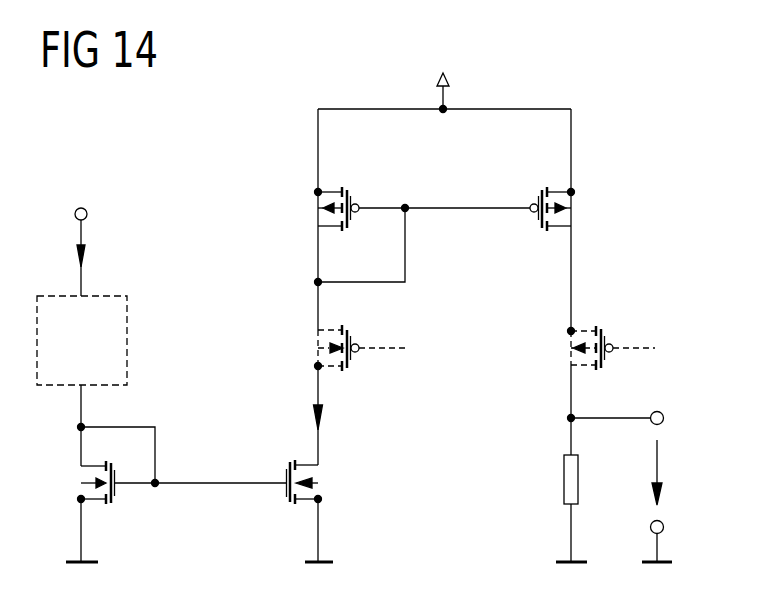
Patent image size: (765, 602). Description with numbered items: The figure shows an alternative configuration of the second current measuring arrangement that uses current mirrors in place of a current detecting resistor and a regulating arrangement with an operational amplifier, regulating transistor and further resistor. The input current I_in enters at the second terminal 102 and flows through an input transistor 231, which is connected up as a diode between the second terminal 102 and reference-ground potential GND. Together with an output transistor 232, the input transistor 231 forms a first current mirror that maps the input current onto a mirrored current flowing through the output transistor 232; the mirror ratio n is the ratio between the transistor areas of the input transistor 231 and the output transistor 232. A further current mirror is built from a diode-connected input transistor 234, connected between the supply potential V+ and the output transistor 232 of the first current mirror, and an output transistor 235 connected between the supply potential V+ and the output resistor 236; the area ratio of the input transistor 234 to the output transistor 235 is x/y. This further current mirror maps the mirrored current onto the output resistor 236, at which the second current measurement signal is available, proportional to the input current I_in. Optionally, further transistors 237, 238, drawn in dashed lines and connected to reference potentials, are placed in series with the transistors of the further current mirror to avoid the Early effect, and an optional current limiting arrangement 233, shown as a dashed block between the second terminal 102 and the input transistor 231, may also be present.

The second terminal 102 is at (87, 213).
The current limiting arrangement 233 is at (127, 352).
The input transistor 231 is at (115, 490).
The output transistor 232 is at (287, 470).
The input transistor 234 is at (357, 199).
The output transistor 235 is at (534, 199).
The further transistor 237 is at (357, 338).
The further transistor 238 is at (609, 340).
The output resistor 236 is at (564, 481).